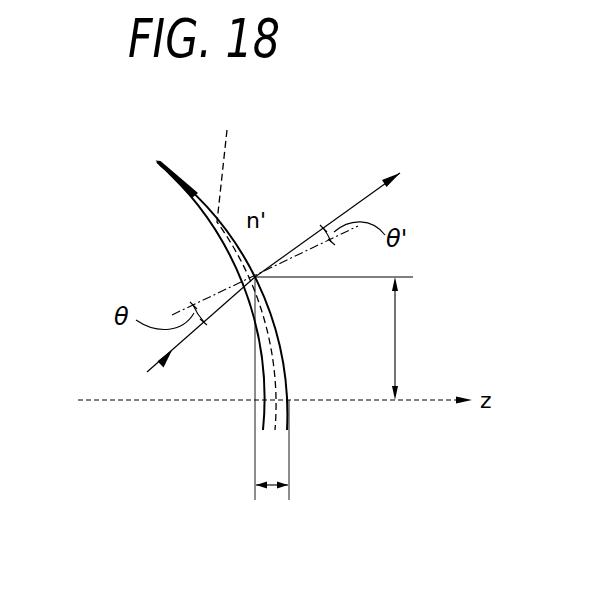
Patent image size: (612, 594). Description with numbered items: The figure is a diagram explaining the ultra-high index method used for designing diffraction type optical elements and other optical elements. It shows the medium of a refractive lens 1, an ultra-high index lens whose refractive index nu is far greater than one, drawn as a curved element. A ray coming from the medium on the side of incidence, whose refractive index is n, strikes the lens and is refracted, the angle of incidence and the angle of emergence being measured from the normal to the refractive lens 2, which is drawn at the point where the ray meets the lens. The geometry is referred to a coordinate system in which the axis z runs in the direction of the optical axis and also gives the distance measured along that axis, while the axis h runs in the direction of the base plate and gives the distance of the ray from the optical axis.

The medium of a refractive lens 1 is at (180, 179).
The normal to the refractive lens 2 is at (181, 311).
The refractive index of the medium on the side of incidence n is at (200, 282).
The refractive index of the ultra-high index lens nu is at (244, 263).
The axis in the direction of the base plate h is at (405, 338).
The axis in the direction of the optical axis z is at (272, 500).